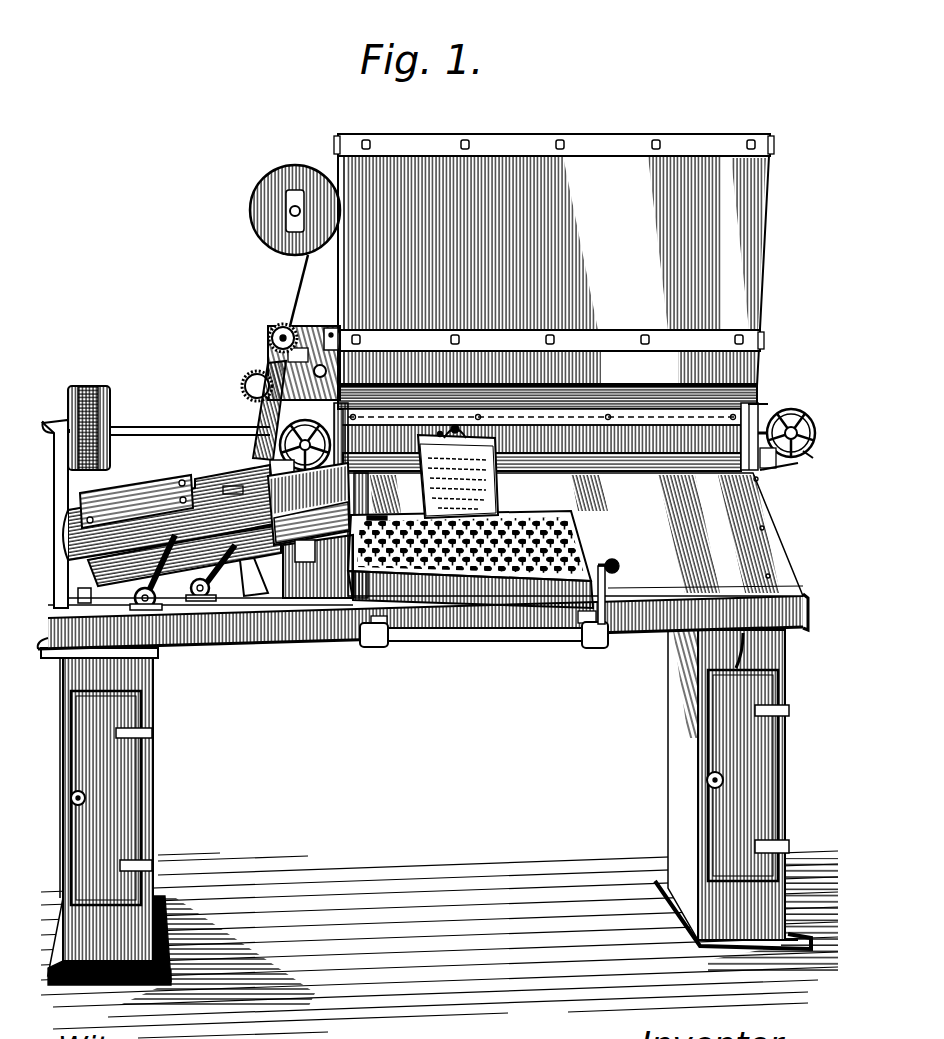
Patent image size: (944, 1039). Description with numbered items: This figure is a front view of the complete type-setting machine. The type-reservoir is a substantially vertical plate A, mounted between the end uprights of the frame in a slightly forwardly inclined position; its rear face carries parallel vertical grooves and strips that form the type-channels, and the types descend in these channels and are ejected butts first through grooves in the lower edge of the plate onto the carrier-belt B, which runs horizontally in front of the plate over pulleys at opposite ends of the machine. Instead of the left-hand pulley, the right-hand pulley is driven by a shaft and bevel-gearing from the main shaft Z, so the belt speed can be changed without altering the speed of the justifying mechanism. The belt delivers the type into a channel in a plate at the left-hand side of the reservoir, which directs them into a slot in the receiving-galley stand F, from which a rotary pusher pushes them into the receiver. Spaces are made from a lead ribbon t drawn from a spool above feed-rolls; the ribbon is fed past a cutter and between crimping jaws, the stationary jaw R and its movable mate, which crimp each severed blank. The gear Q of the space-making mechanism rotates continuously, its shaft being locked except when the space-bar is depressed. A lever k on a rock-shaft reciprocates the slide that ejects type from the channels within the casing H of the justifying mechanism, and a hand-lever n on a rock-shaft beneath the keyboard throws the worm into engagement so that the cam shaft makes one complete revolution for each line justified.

The plate A is at (554, 302).
The lead ribbon t is at (294, 270).
The crimping-jaw R is at (264, 357).
The gear Q is at (240, 383).
The main shaft Z is at (198, 430).
The casing H is at (60, 535).
The lever k is at (172, 525).
The receiving-galley stand F is at (309, 504).
The hand-lever n is at (612, 556).
The carrier-belt B is at (770, 405).